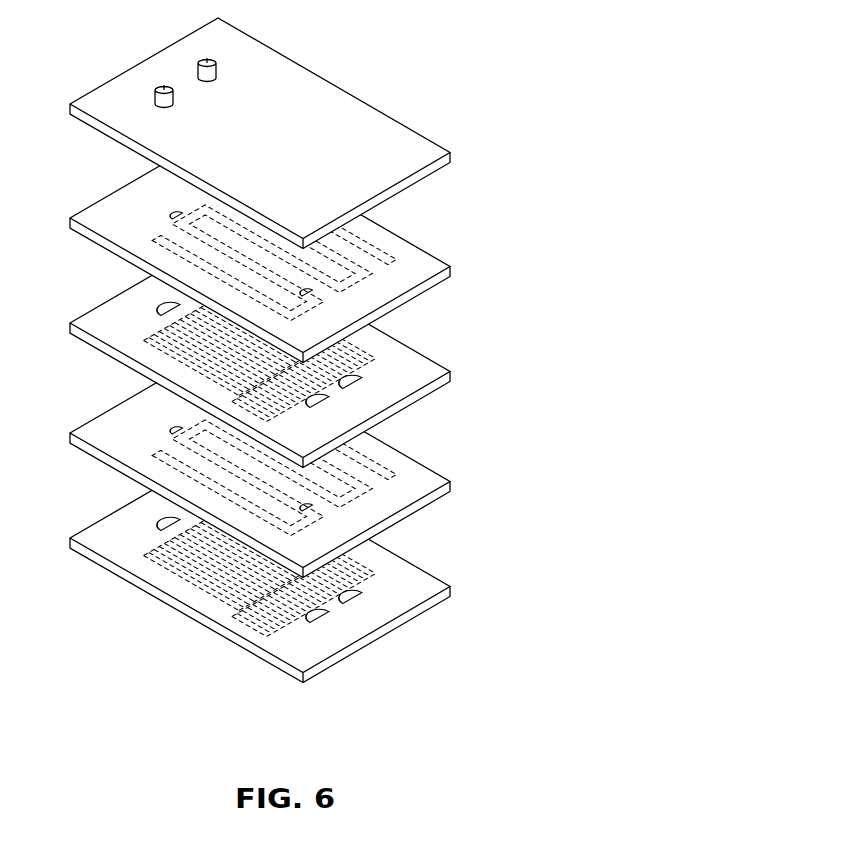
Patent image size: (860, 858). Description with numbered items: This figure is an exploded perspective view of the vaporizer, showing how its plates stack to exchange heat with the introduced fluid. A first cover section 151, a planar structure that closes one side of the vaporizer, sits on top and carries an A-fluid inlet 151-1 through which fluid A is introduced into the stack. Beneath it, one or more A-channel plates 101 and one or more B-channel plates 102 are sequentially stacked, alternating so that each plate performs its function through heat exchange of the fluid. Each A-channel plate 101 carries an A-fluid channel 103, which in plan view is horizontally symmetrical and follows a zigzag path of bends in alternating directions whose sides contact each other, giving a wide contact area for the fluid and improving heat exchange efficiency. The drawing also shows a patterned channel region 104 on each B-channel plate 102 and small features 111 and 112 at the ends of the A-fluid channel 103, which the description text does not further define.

The first cover section 151 is at (451, 153).
The A-fluid inlet 151-1 is at (207, 60).
The A-channel plate 101 is at (451, 267).
The B-channel plate 102 is at (451, 372).
The A-fluid channel 103 is at (173, 242).
The electrode pattern 104 is at (153, 340).
The first contact pad 111 is at (207, 193).
The second contact pad 112 is at (323, 295).